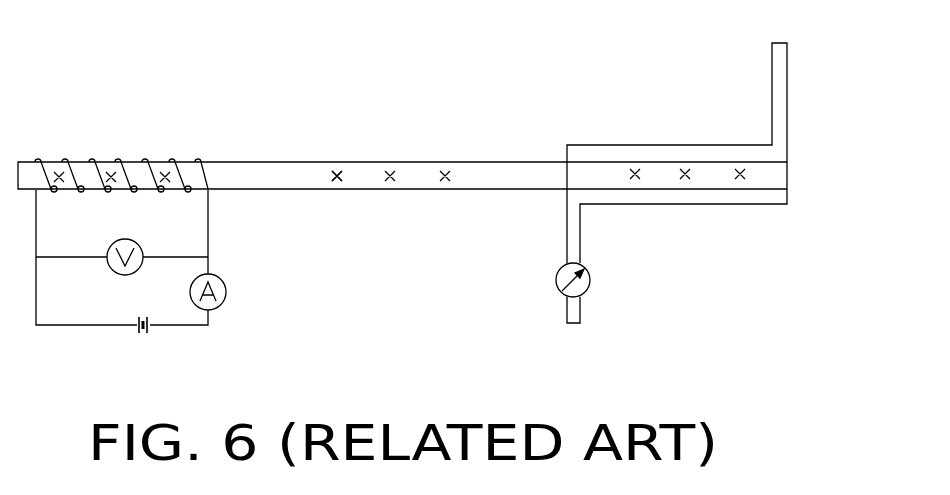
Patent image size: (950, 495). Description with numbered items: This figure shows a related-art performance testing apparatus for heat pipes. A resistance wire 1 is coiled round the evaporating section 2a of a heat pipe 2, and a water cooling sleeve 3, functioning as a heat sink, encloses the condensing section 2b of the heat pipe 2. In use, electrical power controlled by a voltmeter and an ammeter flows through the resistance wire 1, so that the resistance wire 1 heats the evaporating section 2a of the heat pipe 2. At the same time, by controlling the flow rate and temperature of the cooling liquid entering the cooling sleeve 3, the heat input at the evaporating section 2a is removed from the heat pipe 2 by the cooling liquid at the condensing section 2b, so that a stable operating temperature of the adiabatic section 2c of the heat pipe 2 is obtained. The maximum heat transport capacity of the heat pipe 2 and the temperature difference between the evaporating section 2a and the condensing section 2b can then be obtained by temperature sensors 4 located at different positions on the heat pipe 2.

The resistance wire 1 is at (146, 161).
The heat pipe 2 is at (249, 162).
The evaporating section 2a is at (83, 166).
The condensing section 2b is at (620, 174).
The adiabatic section 2c is at (418, 177).
The water cooling sleeve 3 is at (713, 150).
The temperature sensors 4 is at (338, 163).